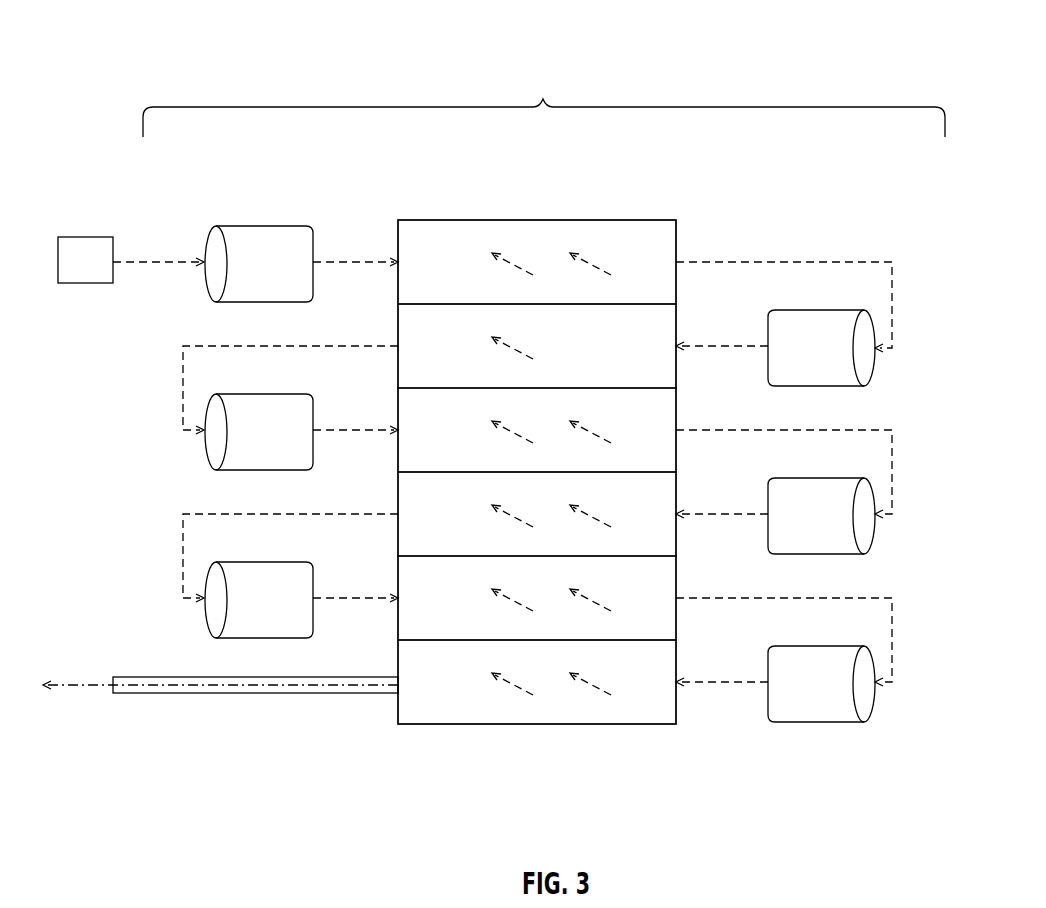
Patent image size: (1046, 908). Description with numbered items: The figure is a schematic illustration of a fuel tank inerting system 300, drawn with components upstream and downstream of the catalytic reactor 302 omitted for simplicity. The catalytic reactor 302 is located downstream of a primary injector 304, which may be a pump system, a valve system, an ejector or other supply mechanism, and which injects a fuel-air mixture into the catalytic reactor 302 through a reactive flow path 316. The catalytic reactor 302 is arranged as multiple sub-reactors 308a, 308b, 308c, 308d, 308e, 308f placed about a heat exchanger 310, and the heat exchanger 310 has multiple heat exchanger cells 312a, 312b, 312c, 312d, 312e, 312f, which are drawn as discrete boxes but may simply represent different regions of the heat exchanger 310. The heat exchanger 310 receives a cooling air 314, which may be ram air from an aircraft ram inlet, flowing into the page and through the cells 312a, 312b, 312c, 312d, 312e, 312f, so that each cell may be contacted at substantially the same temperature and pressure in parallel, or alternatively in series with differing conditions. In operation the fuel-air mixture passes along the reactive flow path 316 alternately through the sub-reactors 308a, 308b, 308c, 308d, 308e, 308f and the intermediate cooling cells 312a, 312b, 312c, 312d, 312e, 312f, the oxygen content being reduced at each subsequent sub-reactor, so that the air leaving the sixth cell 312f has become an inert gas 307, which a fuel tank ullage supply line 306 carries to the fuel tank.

The inerting system 300 is at (108, 88).
The catalytic reactor 302 is at (544, 104).
The primary injector 304 is at (88, 237).
The fuel tank ullage supply line 306 is at (158, 695).
The inert gas 307 is at (92, 677).
The sub-reactor 308a is at (290, 281).
The sub-reactor 308b is at (834, 366).
The sub-reactor 308c is at (290, 449).
The sub-reactor 308d is at (834, 534).
The sub-reactor 308e is at (290, 617).
The sub-reactor 308f is at (834, 702).
The heat exchanger 310 is at (625, 220).
The heat exchanger cell 312a is at (471, 279).
The heat exchanger cell 312b is at (471, 363).
The heat exchanger cell 312c is at (471, 447).
The heat exchanger cell 312d is at (471, 531).
The heat exchanger cell 312e is at (471, 615).
The heat exchanger cell 312f is at (471, 699).
The cooling air 314 is at (590, 265).
The reactive flow path 316 is at (795, 263).